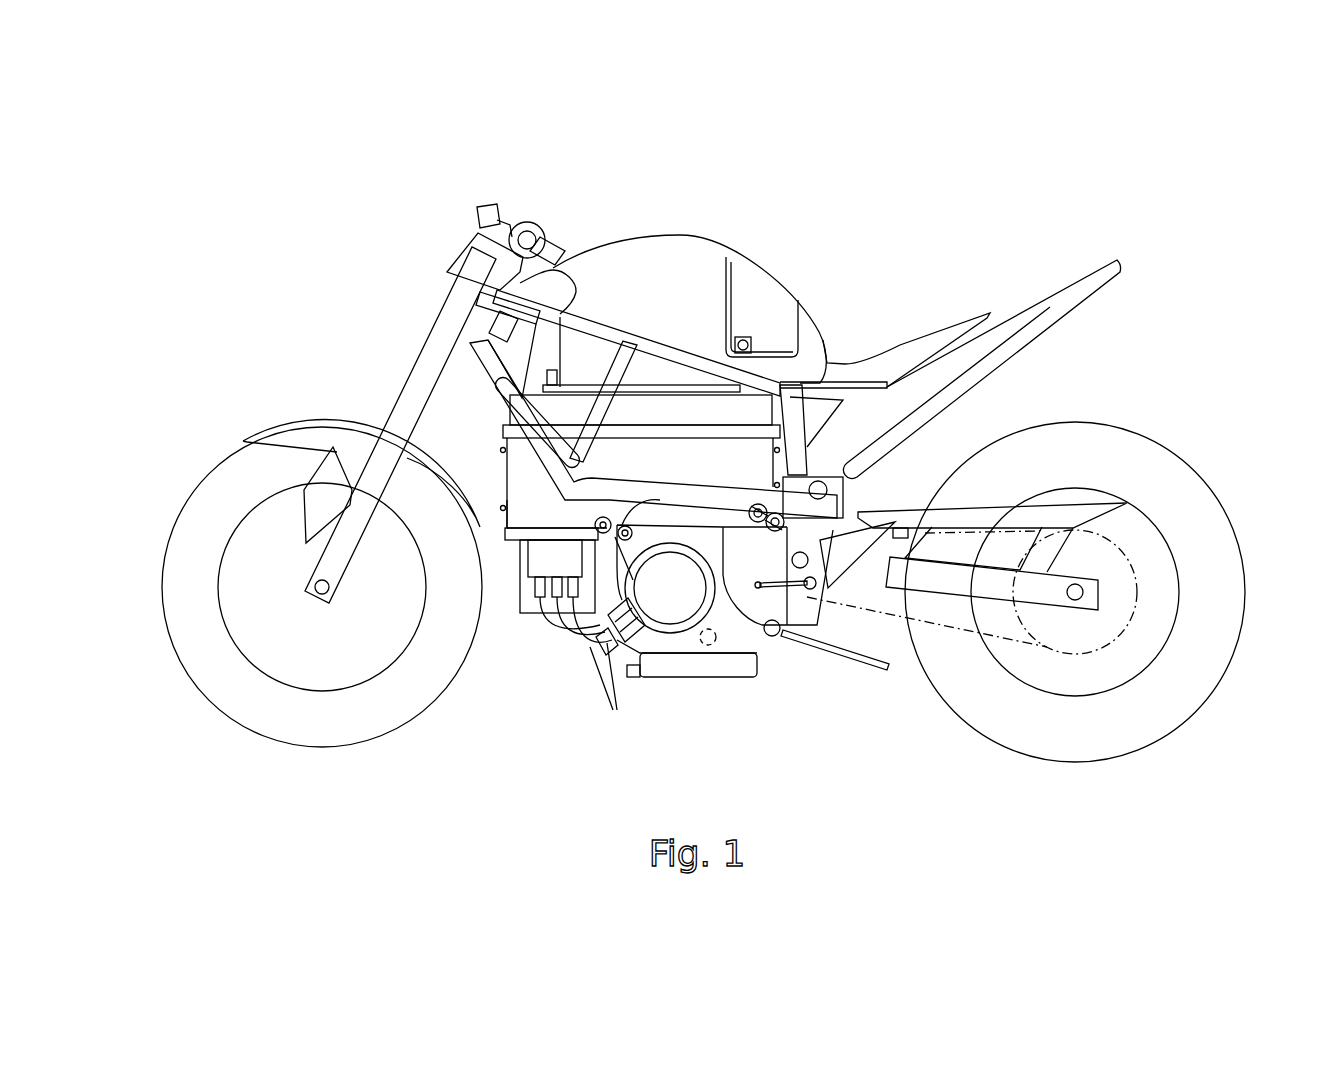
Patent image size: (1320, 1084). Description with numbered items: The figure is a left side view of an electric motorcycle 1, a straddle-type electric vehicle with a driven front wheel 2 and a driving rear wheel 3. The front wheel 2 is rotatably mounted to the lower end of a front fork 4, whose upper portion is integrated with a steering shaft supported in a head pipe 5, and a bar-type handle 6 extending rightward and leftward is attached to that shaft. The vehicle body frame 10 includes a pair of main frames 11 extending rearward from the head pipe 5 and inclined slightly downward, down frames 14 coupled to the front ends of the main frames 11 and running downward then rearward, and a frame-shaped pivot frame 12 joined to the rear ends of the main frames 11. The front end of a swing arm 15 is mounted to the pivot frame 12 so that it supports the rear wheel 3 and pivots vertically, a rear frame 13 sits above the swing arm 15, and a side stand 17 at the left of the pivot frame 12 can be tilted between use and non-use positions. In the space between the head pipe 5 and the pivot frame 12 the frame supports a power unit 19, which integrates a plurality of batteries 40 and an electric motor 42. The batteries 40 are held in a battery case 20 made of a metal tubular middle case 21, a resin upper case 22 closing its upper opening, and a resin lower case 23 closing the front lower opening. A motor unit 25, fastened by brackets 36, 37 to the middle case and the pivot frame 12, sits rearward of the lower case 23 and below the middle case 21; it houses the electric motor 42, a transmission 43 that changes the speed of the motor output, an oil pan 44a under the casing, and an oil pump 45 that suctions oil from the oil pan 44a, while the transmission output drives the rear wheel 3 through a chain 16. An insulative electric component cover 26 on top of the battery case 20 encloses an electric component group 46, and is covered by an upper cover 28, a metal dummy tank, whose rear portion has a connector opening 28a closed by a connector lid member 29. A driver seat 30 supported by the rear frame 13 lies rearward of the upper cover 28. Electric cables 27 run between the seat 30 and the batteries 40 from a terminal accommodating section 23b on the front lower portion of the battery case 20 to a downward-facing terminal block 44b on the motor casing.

The electric motorcycle 1 is at (383, 213).
The front wheel 2 is at (222, 457).
The rear wheel 3 is at (1187, 455).
The front fork 4 is at (407, 400).
The head pipe 5 is at (480, 323).
The handle 6 is at (557, 230).
The vehicle body frame 10 is at (800, 354).
The main frames 11 is at (540, 307).
The pivot frame 12 is at (833, 618).
The rear frame 13 is at (1088, 262).
The down frames 14 is at (500, 398).
The swing arm 15 is at (937, 575).
The chain 16 is at (967, 600).
The side stand 17 is at (847, 663).
The power unit 19 is at (724, 665).
The battery case 20 is at (606, 494).
The middle case 21 is at (525, 595).
The upper case 22 is at (497, 473).
The lower case 23 is at (543, 621).
The terminal accommodating section 23b is at (532, 510).
The motor unit 25 is at (673, 615).
The electric component cover 26 is at (658, 373).
The electric cables 27 is at (597, 645).
The upper cover 28 is at (720, 274).
The connector opening 28a is at (822, 330).
The connector lid member 29 is at (773, 307).
The driver seat 30 is at (900, 355).
The bracket 36 is at (637, 570).
The bracket 37 is at (767, 647).
The batteries 40 is at (678, 457).
The electric motor 42 is at (675, 612).
The transmission 43 is at (737, 628).
The oil pan 44a is at (765, 657).
The terminal block 44b is at (650, 643).
The oil pump 45 is at (723, 605).
The electric component group 46 is at (593, 360).